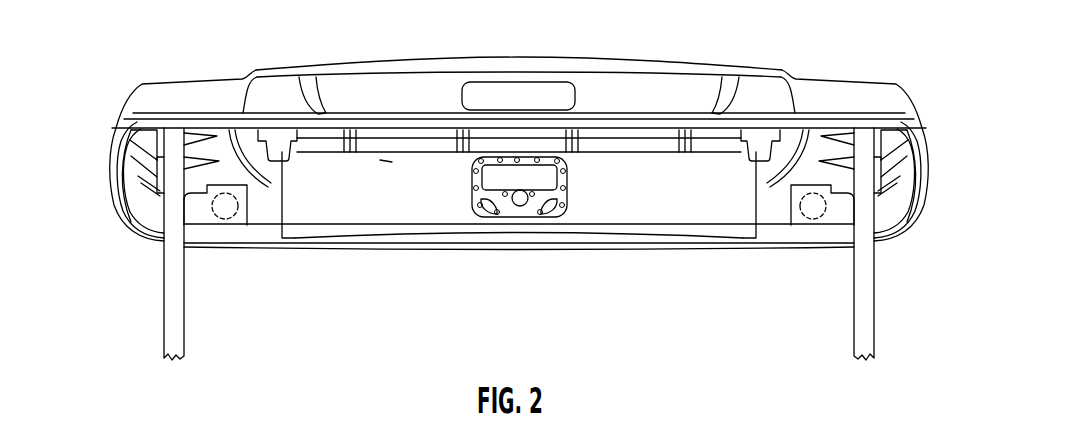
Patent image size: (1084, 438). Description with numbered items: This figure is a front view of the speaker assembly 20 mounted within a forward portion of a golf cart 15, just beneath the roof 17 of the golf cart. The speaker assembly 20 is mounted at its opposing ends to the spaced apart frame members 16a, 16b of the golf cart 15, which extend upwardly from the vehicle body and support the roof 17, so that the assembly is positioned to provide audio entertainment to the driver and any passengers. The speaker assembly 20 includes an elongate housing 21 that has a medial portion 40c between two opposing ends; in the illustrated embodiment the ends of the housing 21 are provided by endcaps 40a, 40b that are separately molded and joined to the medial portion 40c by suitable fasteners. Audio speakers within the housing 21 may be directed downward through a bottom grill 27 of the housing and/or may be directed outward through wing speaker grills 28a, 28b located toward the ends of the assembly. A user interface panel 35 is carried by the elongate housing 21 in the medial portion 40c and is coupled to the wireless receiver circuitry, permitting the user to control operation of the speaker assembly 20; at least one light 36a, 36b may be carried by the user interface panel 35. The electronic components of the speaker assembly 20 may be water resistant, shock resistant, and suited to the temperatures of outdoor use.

The golf cart 15 is at (133, 59).
The roof 17 is at (700, 63).
The speaker assembly 20 is at (228, 247).
The elongate housing 21 is at (302, 214).
The bottom grill 27 is at (378, 239).
The frame member 16a is at (164, 299).
The frame member 16b is at (875, 305).
The wing speaker grill 28a is at (249, 227).
The wing speaker grill 28b is at (830, 228).
The endcap 40a is at (277, 130).
The endcap 40b is at (771, 186).
The medial portion 40c is at (386, 163).
The user interface panel 35 is at (570, 201).
The light 36a is at (492, 214).
The light 36b is at (550, 214).